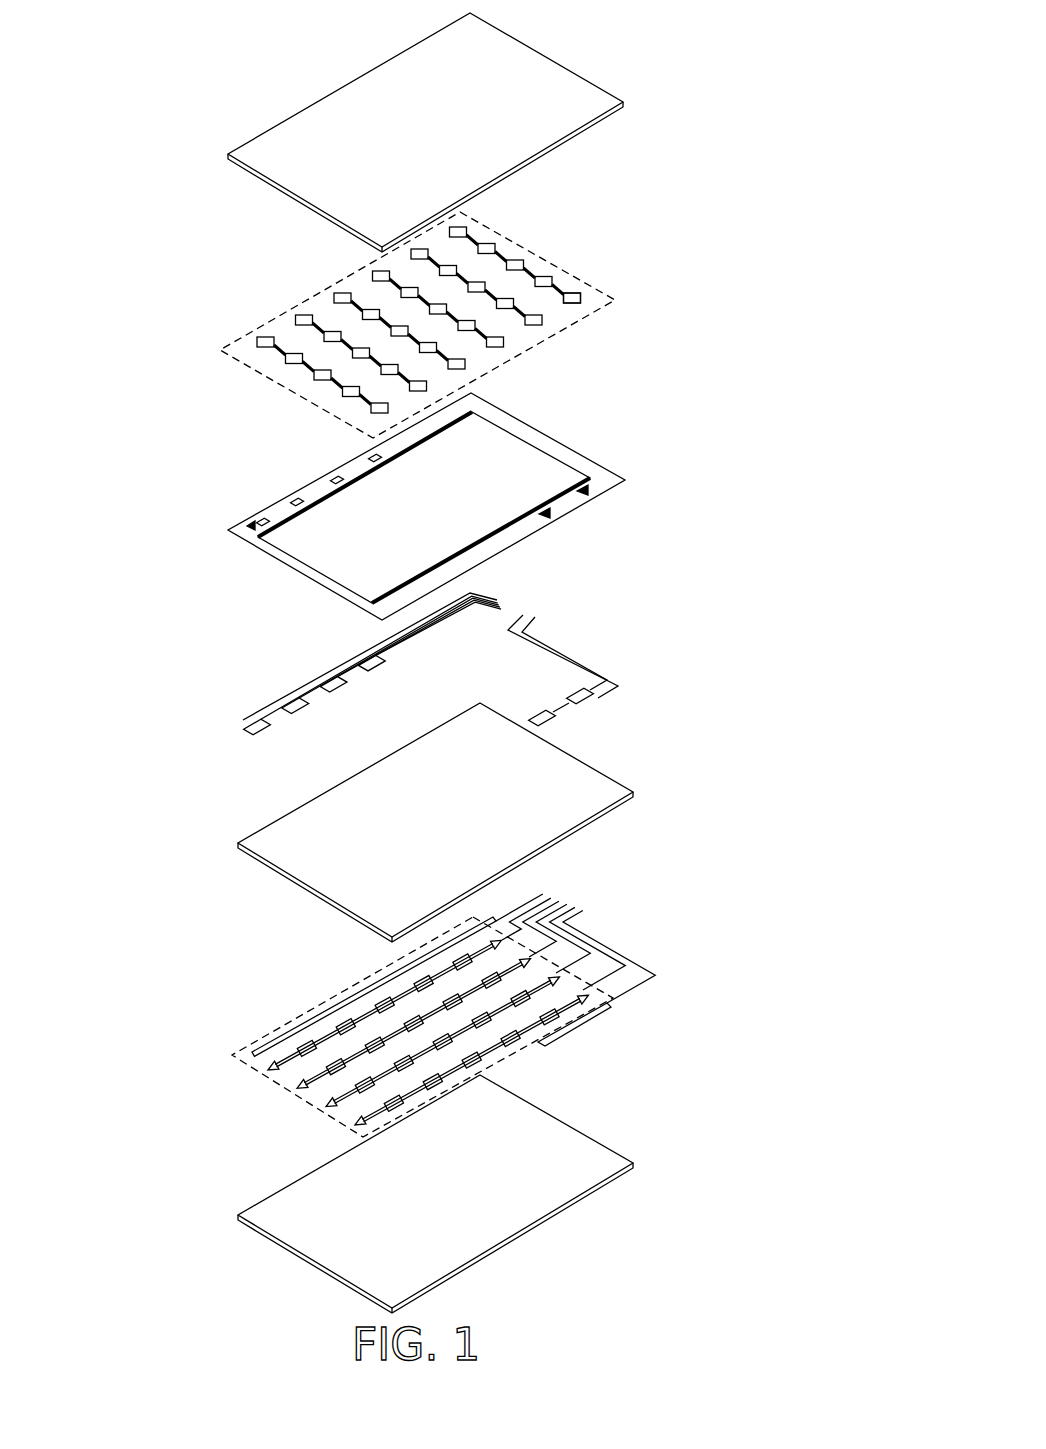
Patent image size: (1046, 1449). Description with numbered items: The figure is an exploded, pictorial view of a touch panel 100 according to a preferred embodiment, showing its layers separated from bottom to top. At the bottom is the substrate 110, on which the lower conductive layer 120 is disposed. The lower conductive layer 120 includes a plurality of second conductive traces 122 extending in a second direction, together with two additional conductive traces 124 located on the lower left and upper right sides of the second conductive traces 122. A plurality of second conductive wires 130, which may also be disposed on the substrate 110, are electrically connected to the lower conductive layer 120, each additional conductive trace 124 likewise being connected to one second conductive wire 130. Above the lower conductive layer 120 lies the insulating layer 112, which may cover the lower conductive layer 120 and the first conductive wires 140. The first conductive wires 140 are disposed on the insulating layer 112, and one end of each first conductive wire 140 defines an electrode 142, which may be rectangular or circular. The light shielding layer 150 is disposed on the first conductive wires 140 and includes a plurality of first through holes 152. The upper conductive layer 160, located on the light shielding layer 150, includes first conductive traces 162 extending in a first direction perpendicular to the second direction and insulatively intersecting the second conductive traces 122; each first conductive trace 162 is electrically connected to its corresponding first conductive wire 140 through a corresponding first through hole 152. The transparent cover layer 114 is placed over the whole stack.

The touch panel 100 is at (338, 63).
The substrate 110 is at (555, 1157).
The insulating layer 112 is at (587, 790).
The transparent cover layer 114 is at (562, 92).
The lower conductive layer 120 is at (587, 1033).
The second conductive traces 122 is at (383, 1003).
The additional conductive traces 124 is at (292, 1027).
The second conductive wires 130 is at (592, 937).
The first conductive wires 140 is at (570, 652).
The electrode 142 is at (590, 693).
The light shielding layer 150 is at (589, 442).
The first through holes 152 is at (580, 493).
The upper conductive layer 160 is at (522, 242).
The first conductive traces 162 is at (577, 298).